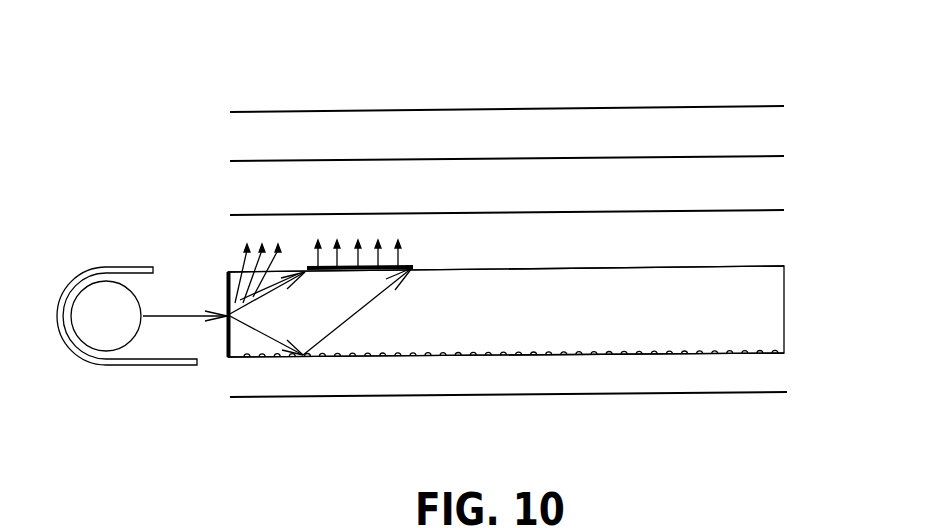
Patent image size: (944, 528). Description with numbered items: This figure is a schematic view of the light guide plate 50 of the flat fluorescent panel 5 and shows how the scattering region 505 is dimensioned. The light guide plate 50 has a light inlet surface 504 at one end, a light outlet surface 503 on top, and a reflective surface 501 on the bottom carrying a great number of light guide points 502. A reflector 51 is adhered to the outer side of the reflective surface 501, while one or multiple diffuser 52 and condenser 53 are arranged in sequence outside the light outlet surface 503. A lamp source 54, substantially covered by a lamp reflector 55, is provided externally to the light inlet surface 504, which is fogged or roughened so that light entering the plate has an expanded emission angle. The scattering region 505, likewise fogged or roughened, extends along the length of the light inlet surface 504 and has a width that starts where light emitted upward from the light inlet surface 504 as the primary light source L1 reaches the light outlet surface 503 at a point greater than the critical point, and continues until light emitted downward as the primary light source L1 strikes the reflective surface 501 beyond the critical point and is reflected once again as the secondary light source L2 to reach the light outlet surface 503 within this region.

The flat fluorescent panel 5 is at (103, 152).
The light guide plate 50 is at (785, 315).
The reflective surface 501 is at (773, 355).
The light guide points 502 is at (753, 353).
The light outlet surface 503 is at (753, 265).
The light inlet surface 504 is at (228, 285).
The scattering region 505 is at (333, 268).
The reflector 51 is at (737, 393).
The diffuser 52 is at (752, 210).
The condenser 53 is at (728, 106).
The lamp source 54 is at (76, 301).
The lamp reflector 55 is at (67, 343).
The primary light source L1 is at (228, 273).
The secondary light source L2 is at (344, 323).